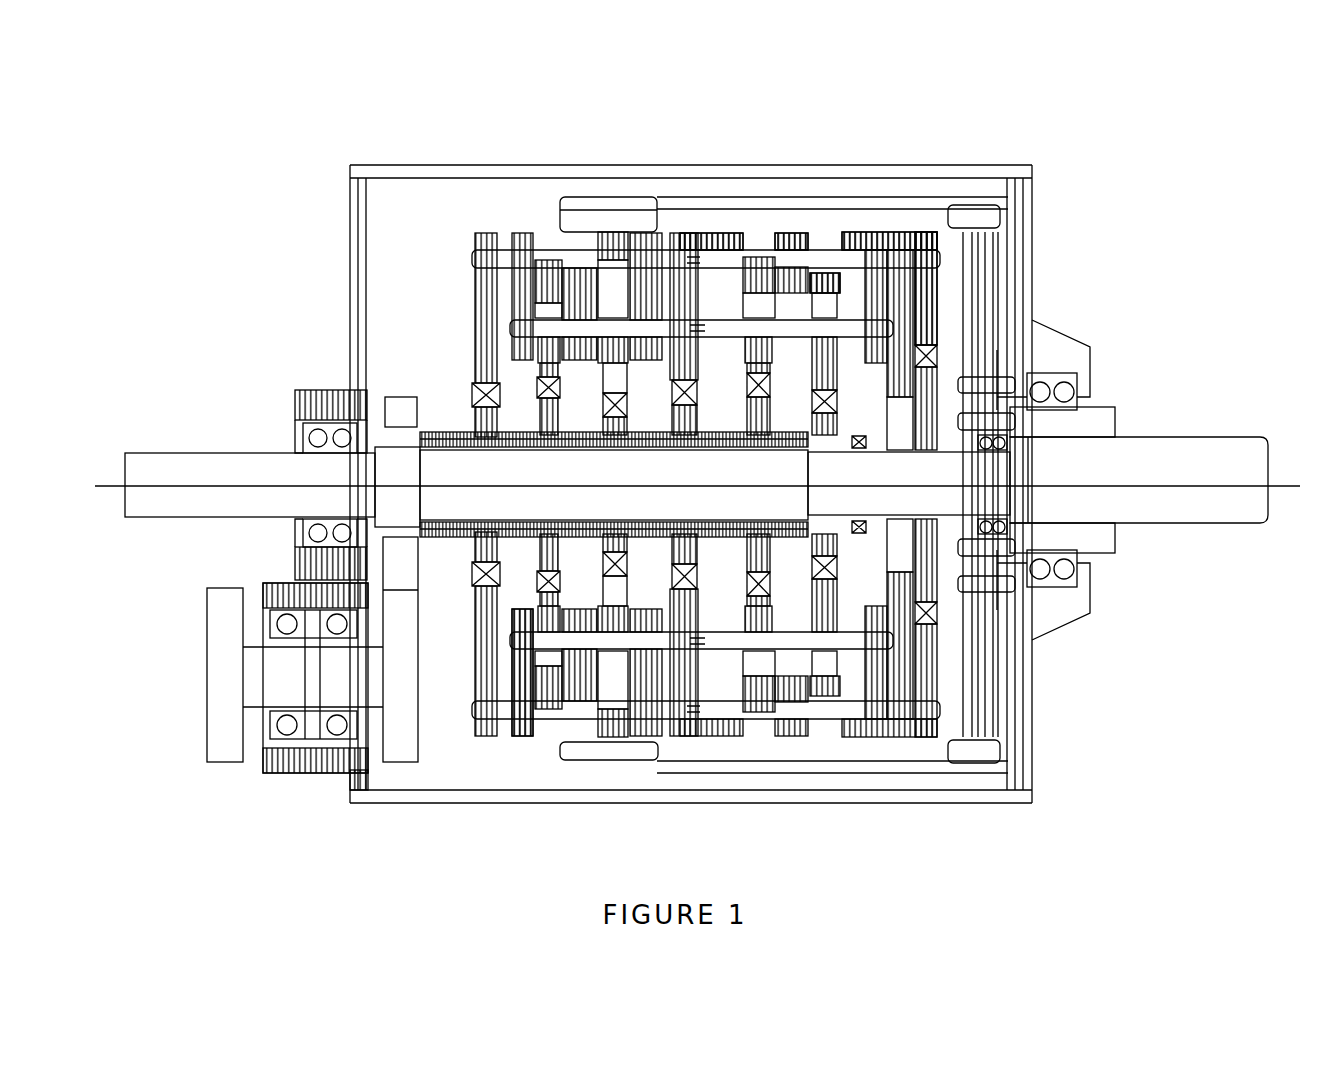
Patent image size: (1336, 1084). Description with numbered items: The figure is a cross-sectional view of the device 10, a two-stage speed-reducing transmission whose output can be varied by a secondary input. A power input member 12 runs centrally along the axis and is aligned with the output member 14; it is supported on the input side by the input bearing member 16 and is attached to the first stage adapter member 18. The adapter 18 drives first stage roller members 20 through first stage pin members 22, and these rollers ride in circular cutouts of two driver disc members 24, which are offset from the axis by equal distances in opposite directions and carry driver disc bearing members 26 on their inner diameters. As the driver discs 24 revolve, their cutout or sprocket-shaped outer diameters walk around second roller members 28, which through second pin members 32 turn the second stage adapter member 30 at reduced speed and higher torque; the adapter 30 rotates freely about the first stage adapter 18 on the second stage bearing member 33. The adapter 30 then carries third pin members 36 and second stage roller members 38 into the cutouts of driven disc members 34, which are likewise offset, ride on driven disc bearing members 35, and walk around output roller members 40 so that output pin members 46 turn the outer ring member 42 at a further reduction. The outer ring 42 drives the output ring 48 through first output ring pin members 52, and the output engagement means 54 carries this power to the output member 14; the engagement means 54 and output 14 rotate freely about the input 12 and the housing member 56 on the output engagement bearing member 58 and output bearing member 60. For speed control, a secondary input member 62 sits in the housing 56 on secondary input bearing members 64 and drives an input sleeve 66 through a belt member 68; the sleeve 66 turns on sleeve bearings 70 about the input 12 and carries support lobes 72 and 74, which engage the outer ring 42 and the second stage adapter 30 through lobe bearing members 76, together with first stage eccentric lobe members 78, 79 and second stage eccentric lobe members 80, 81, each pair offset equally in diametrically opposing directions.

The device 10 is at (190, 232).
The power input member 12 is at (183, 463).
The output member 14 is at (1163, 447).
The input bearing member 16 is at (300, 442).
The first stage adapter member 18 is at (925, 388).
The first stage roller members 20 is at (885, 660).
The first stage pin members 22 is at (843, 348).
The driver disc members 24 is at (822, 248).
The driver disc bearing members 26 is at (770, 566).
The second roller members 28 is at (757, 262).
The second stage adapter member 30 is at (718, 722).
The second pin members 32 is at (893, 327).
The second stage bearing member 33 is at (937, 607).
The driven disc members 34 is at (575, 735).
The driven disc bearing members 35 is at (560, 389).
The third pin members 36 is at (508, 323).
The second stage roller members 38 is at (600, 305).
The output roller members 40 is at (617, 240).
The outer ring member 42 is at (477, 647).
The output pin members 46 is at (473, 257).
The output ring 48 is at (902, 762).
The first output ring pin members 52 is at (608, 748).
The output engagement means 54 is at (993, 702).
The housing member 56 is at (348, 272).
The output engagement bearing member 58 is at (1007, 437).
The output bearing member 60 is at (1077, 567).
The secondary input member 62 is at (207, 673).
The secondary input bearing members 64 is at (317, 742).
The input sleeve 66 is at (450, 428).
The belt member 68 is at (417, 580).
The sleeve bearings 70 is at (420, 523).
The support lobe 72 is at (500, 397).
The support lobe 74 is at (697, 576).
The lobe bearing members 76 is at (697, 393).
The first stage eccentric lobe member 78 is at (770, 390).
The first stage eccentric lobe member 79 is at (837, 402).
The second stage eccentric lobe member 80 is at (627, 564).
The second stage eccentric lobe member 81 is at (560, 571).